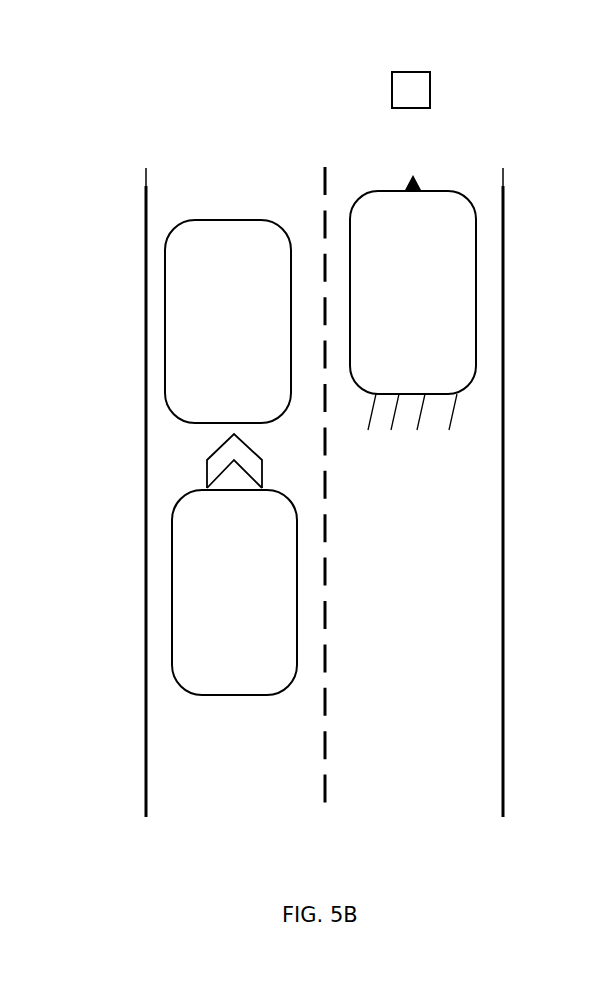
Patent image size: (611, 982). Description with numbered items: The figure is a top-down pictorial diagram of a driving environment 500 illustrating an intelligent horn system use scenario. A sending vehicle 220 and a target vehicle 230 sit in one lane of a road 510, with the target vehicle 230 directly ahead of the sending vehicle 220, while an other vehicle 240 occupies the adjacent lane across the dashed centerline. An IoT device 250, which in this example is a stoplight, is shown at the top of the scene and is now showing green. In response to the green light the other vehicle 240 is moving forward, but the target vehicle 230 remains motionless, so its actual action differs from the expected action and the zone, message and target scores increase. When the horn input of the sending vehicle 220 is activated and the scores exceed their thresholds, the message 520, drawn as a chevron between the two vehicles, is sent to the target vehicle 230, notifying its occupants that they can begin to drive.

The driving environment 500 is at (181, 115).
The road 510 is at (146, 207).
The IoT device 250 is at (430, 93).
The target vehicle 230 is at (165, 330).
The message 520 is at (207, 473).
The sending vehicle 220 is at (172, 600).
The other vehicle 240 is at (476, 321).